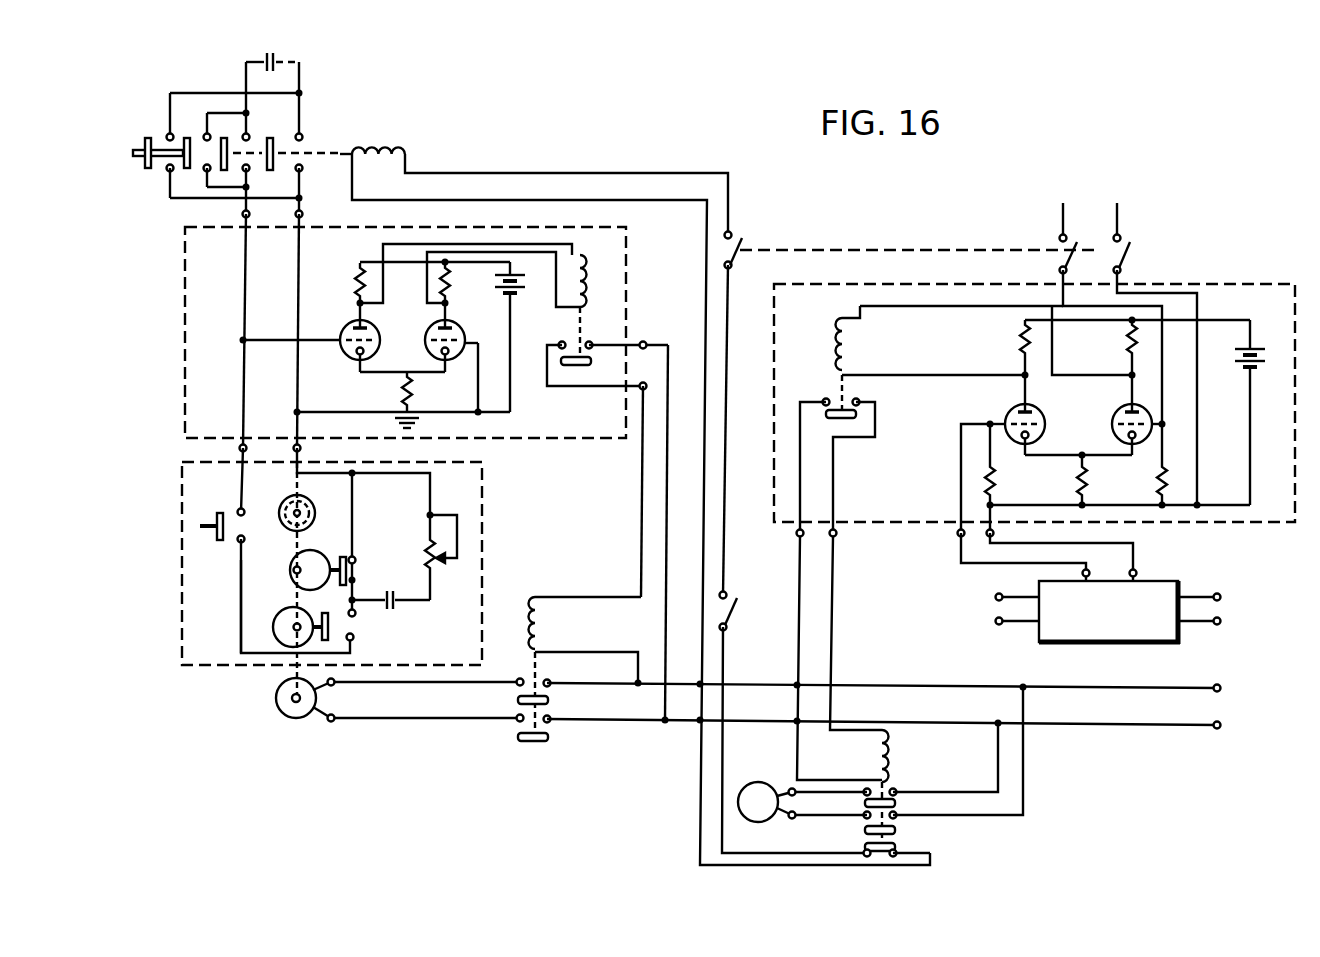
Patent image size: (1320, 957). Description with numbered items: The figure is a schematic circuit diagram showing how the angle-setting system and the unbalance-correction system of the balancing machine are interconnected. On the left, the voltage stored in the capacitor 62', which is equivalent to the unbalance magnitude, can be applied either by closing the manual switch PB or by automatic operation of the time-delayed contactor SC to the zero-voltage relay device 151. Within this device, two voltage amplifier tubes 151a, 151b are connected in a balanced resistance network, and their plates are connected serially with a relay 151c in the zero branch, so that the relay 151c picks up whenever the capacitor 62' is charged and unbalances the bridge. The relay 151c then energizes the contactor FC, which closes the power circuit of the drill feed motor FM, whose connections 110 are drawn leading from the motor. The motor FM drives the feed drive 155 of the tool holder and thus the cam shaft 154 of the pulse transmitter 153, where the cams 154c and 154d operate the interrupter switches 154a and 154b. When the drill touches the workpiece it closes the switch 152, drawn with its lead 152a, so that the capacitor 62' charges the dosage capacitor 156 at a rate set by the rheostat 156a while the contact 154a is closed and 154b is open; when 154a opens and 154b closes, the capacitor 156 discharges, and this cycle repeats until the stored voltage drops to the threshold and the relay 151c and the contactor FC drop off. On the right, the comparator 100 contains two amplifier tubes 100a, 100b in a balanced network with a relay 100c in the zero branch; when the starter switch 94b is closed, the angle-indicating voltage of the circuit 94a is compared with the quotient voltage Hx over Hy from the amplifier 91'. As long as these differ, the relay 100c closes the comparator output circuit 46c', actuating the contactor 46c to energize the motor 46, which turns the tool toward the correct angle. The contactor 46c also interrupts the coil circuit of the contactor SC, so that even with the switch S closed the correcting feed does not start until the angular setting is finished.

The storage capacitor 62' is at (291, 56).
The manual switch PB is at (146, 150).
The contactor SC is at (341, 139).
The zero-voltage relay device 151 is at (626, 252).
The voltage amplifier tube 151a is at (352, 357).
The voltage amplifier tube 151b is at (458, 356).
The relay 151c is at (590, 290).
The pulse transmitter 153 is at (482, 486).
The switch 152 is at (212, 529).
The switch lead 152a is at (241, 646).
The feed drive 155 is at (294, 499).
The cam 154c is at (290, 570).
The interrupter switch 154a is at (348, 568).
The cam 154d is at (277, 623).
The interrupter switch 154b is at (350, 638).
The dosage capacitor 156 is at (389, 609).
The rheostat 156a is at (431, 572).
The cam shaft 154 is at (292, 670).
The drill feed motor FM is at (281, 713).
The motor leads 110 is at (371, 682).
The contactor FC is at (580, 669).
The switch S is at (754, 616).
The selector switch circuit 94a is at (1117, 222).
The starter switch 94b is at (878, 253).
The comparator 100 is at (1158, 284).
The relay 100c is at (839, 320).
The amplifier tube 100a is at (1036, 413).
The amplifier tube 100b is at (1122, 437).
The amplifier 91' is at (1070, 588).
The Hx voltage Hx is at (1000, 609).
The Hy voltage Hy is at (1213, 609).
The comparator output circuit 46c' is at (852, 633).
The contactor 46c is at (907, 697).
The motor 46 is at (766, 788).